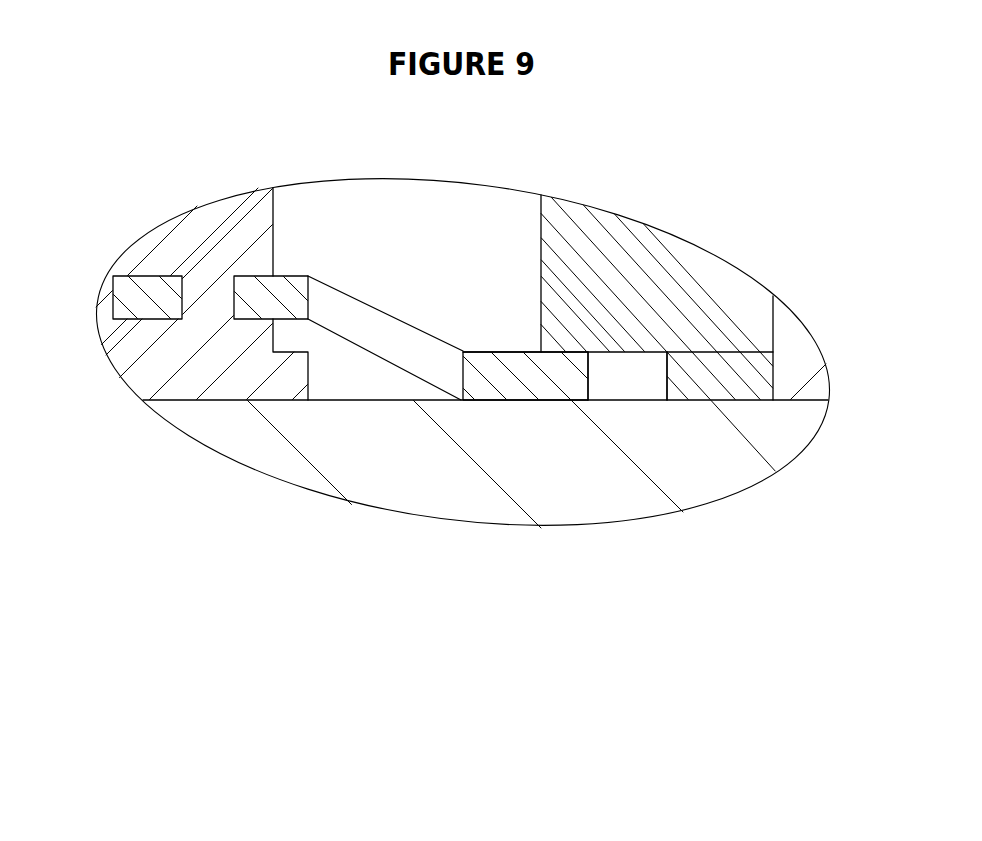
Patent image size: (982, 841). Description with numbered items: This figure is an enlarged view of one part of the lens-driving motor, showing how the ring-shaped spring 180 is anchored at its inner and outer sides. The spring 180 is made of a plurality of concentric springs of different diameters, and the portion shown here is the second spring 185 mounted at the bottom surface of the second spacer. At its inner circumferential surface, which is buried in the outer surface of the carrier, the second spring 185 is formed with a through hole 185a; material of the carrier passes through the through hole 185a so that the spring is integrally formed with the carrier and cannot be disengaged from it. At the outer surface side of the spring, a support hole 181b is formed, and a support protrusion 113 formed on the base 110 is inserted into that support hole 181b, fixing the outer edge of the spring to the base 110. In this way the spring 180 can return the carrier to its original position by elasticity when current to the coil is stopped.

The base 110 is at (718, 473).
The support protrusion 113 is at (613, 377).
The spring 180 is at (392, 415).
The support hole 181b is at (667, 377).
The second spring 185 is at (521, 376).
The through hole 185a is at (231, 297).